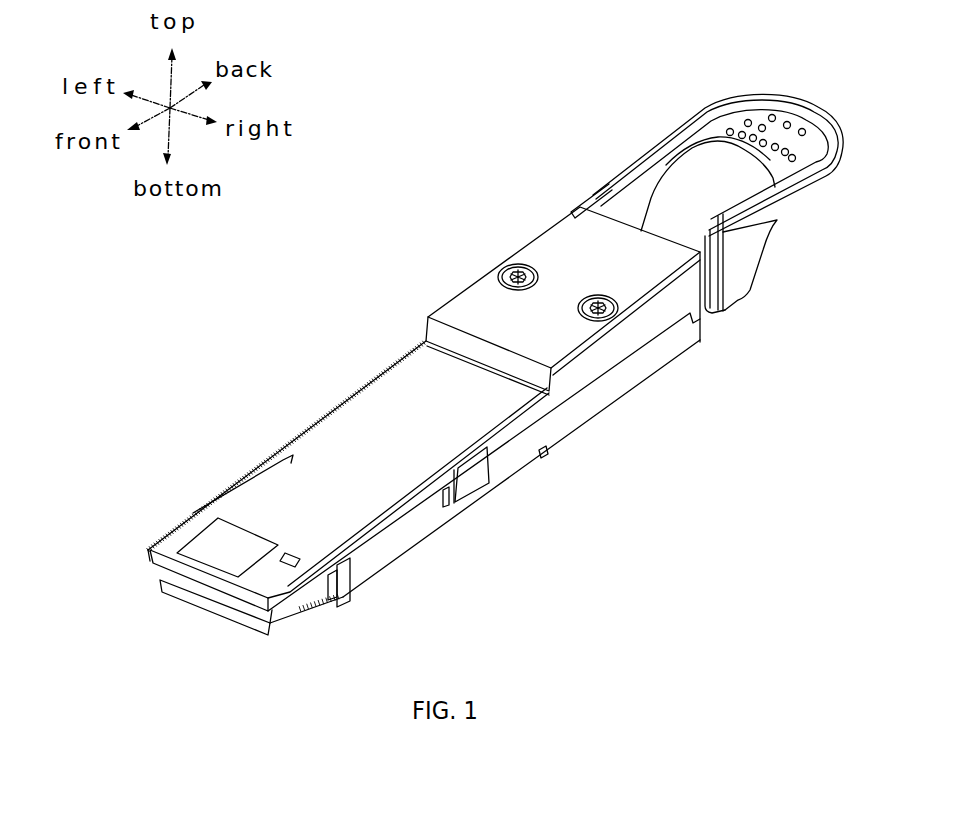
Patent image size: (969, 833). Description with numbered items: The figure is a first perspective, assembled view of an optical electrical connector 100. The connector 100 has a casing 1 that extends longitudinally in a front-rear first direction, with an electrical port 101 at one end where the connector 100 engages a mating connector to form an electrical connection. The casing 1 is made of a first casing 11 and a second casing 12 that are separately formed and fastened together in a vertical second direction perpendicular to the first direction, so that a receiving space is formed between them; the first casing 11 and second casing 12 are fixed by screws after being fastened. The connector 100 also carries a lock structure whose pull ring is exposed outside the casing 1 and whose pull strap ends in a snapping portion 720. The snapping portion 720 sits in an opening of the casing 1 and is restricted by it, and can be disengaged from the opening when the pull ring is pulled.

The optical electrical connector 100 is at (417, 213).
The casing 1 is at (749, 458).
The first casing 11 is at (608, 355).
The second casing 12 is at (587, 408).
The snapping portion 720 is at (455, 497).
The electrical port 101 is at (167, 573).